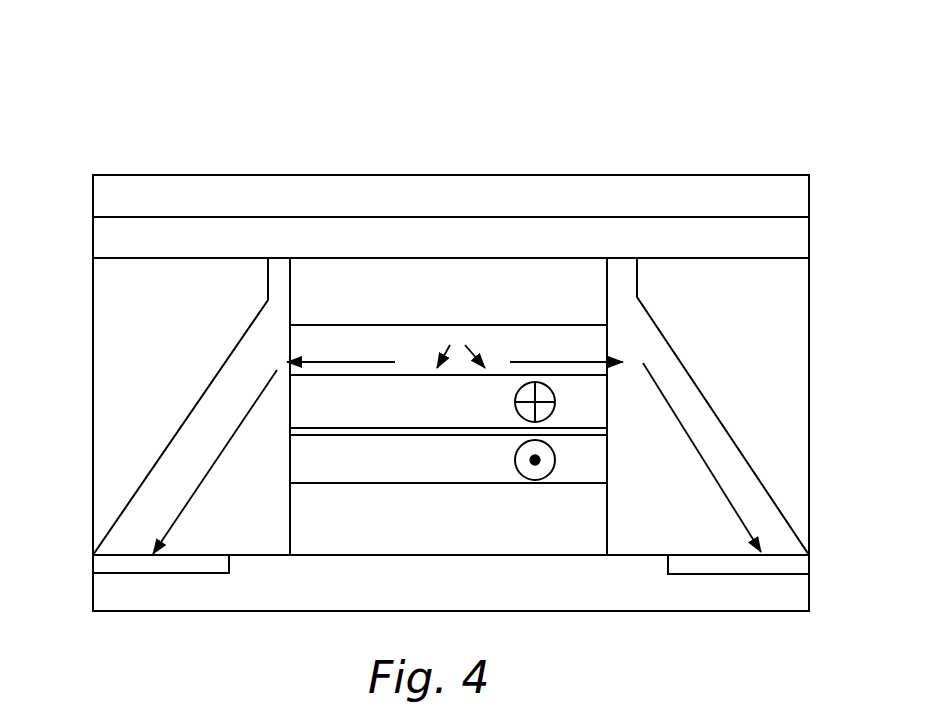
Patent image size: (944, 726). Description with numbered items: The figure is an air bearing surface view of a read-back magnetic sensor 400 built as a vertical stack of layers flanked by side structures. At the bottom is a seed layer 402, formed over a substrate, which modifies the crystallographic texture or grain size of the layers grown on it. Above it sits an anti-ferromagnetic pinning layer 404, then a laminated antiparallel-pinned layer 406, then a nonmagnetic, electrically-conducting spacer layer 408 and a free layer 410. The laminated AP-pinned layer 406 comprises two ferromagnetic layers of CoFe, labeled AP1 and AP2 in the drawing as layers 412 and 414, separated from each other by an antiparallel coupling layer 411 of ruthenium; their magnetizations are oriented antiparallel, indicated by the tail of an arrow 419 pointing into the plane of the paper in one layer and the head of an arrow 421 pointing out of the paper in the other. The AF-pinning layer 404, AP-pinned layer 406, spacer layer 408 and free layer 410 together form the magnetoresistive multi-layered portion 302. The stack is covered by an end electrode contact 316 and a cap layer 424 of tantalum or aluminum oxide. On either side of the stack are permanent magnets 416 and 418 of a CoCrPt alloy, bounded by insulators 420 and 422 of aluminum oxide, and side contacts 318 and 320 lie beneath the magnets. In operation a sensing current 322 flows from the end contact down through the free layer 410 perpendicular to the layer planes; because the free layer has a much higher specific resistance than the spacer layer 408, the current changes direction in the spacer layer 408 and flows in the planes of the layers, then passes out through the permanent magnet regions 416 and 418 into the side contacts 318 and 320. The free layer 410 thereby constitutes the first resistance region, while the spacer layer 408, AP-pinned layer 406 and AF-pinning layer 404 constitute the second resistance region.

The sensor 400 is at (522, 116).
The cap layer 424 is at (695, 193).
The end electrode contact 316 is at (737, 242).
The free layer 410 is at (448, 406).
The sensing current 322 is at (463, 323).
The second ferromagnetic layer 412 is at (455, 381).
The AP2 layer 414 is at (448, 459).
The tail of an arrow 419 is at (545, 392).
The head of an arrow 421 is at (545, 452).
The laminated antiparallel-pinned layer 406 is at (612, 377).
The anti-ferromagnetic pinning layer 404 is at (448, 523).
The seed layer 402 is at (451, 583).
The side contact 318 is at (130, 563).
The side contact 320 is at (783, 567).
The insulator 420 is at (180, 406).
The permanent magnet 416 is at (215, 462).
The insulator 422 is at (723, 406).
The permanent magnet 418 is at (699, 457).
The spacer layer 408 is at (608, 340).
The multi-layered portion 302 is at (280, 347).
The antiparallel coupling layer 411 is at (290, 429).